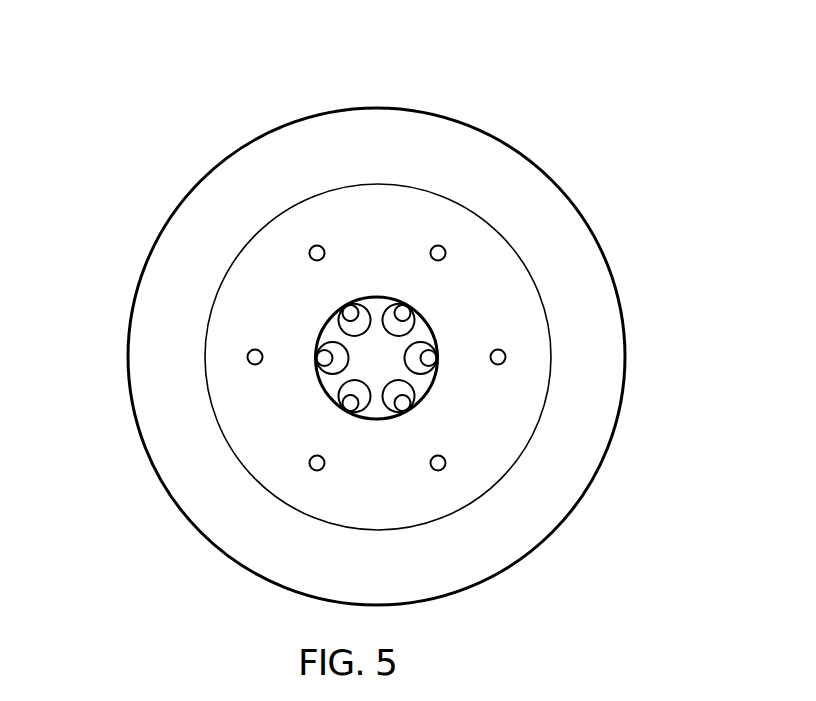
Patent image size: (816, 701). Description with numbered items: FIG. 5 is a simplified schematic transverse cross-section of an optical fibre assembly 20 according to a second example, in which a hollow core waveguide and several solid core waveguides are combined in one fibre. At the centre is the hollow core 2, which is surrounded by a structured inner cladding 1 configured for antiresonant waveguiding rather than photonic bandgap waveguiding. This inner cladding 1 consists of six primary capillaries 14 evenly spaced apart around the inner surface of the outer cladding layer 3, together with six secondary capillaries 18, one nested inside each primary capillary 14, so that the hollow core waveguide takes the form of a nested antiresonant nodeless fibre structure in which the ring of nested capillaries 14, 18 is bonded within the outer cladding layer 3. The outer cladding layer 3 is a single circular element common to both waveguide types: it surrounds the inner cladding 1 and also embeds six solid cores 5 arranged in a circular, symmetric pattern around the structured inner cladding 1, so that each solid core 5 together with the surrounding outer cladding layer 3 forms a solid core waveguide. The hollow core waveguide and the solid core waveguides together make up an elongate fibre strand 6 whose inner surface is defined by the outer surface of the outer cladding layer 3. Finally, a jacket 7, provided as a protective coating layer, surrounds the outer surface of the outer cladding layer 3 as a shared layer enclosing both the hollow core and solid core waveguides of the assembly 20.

The assembly 20 is at (233, 115).
The outer jacket 7 is at (160, 447).
The elongate fibre strand 6 is at (285, 210).
The outer cladding layer 3 is at (215, 365).
The solid core 5 is at (247, 357).
The structured inner cladding 1 is at (335, 330).
The hollow core 2 is at (378, 365).
The secondary capillary 18 is at (425, 355).
The primary capillary 14 is at (417, 327).